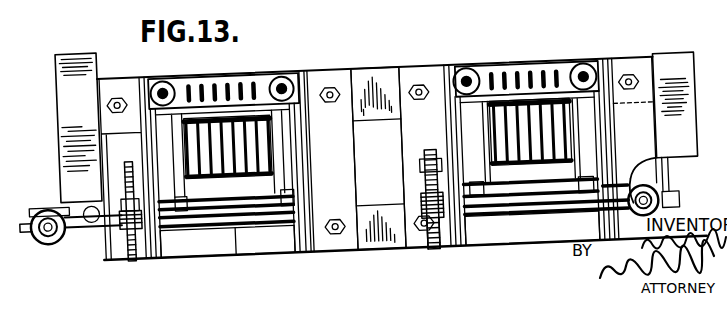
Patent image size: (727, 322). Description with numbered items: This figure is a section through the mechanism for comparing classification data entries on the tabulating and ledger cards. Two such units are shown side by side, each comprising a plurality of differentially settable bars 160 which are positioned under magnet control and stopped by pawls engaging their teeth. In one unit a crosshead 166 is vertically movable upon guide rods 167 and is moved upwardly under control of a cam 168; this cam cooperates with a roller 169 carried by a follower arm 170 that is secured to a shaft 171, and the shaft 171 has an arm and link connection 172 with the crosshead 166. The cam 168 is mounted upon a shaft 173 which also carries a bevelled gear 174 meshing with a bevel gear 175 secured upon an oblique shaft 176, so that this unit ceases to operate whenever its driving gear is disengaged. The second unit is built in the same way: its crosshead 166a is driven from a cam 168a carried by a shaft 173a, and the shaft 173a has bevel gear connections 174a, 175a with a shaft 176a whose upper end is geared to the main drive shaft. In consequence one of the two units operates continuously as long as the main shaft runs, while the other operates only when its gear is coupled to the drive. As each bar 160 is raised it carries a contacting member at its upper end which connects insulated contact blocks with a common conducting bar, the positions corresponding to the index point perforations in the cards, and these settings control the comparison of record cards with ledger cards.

The differentially settable bars 160 is at (244, 86).
The crosshead 166 is at (565, 81).
The crosshead of the second unit 166a is at (273, 79).
The guide rods 167 is at (466, 85).
The cam 168 is at (423, 163).
The cam of the second unit 168a is at (121, 262).
The roller 169 is at (416, 205).
The follower arm 170 is at (440, 260).
The shaft 171 is at (528, 205).
The arm and link connection 172 is at (601, 148).
The shaft 173 is at (502, 233).
The shaft of the second unit 173a is at (224, 233).
The bevelled gear 174 is at (661, 196).
The bevel gear connection 174a is at (73, 247).
The bevel gear 175 is at (668, 231).
The bevel gear connection 175a is at (43, 241).
The oblique shaft 176 is at (666, 210).
The shaft 176a is at (31, 242).